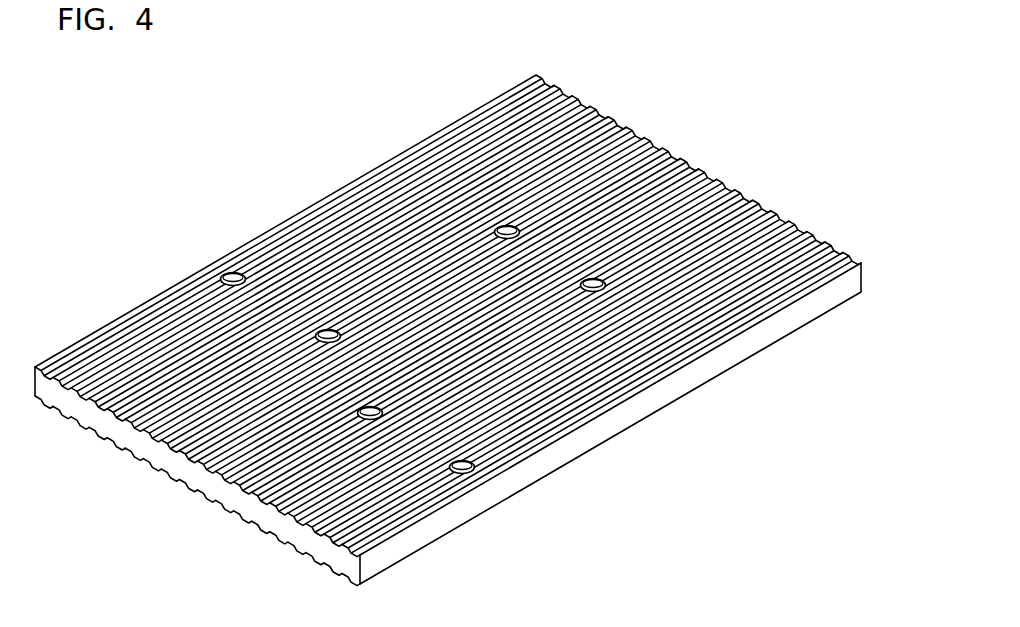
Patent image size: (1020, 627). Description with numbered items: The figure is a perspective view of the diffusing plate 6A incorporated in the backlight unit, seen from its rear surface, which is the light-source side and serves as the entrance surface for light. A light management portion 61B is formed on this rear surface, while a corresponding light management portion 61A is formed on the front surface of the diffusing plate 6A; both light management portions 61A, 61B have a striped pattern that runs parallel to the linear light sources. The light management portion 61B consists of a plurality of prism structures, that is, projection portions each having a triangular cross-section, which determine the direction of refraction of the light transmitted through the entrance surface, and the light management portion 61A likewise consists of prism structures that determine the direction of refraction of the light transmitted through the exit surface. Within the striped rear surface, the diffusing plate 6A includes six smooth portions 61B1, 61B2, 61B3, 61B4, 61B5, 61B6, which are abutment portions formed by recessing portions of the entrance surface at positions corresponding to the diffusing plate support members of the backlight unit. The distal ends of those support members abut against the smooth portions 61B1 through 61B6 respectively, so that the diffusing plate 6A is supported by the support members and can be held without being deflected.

The diffusing plate 6A is at (352, 116).
The light management portion 61A is at (274, 547).
The light management portion 61B is at (623, 155).
The smooth portion 61B1 is at (240, 273).
The smooth portion 61B2 is at (335, 327).
The smooth portion 61B3 is at (507, 232).
The smooth portion 61B4 is at (593, 285).
The smooth portion 61B5 is at (370, 413).
The smooth portion 61B6 is at (462, 467).